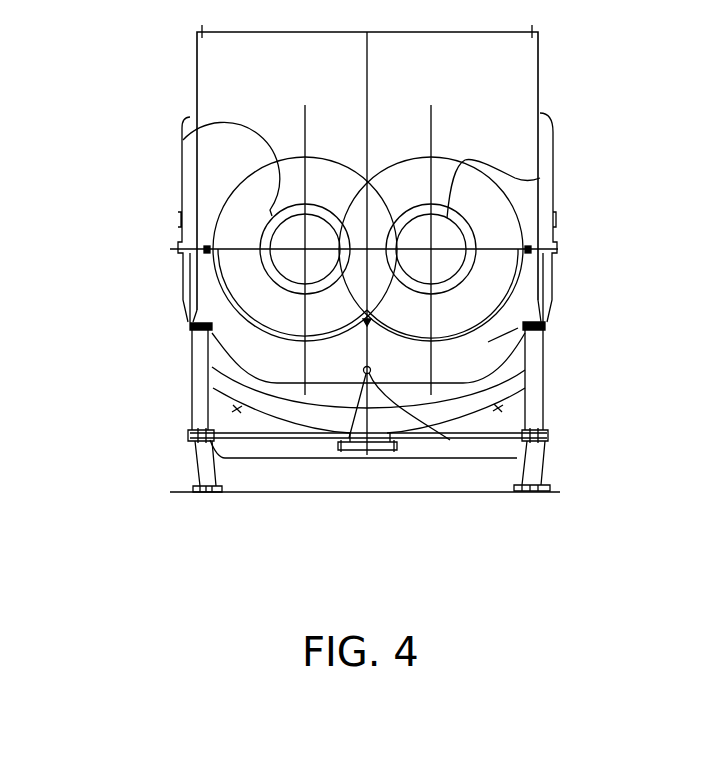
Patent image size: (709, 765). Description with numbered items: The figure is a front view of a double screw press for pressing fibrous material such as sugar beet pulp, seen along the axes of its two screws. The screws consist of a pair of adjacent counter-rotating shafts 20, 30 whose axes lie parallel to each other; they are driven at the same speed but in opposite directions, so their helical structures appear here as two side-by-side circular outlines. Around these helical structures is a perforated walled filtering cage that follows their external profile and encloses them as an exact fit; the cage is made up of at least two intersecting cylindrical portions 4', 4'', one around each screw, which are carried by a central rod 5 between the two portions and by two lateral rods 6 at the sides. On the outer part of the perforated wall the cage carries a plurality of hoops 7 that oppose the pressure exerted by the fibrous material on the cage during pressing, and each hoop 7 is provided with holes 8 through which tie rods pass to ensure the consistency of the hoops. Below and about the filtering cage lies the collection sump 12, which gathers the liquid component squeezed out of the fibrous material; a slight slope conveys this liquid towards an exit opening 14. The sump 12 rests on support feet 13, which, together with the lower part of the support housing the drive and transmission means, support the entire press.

The cylindrical portion 4' is at (216, 275).
The cylindrical portion 4'' is at (506, 273).
The shaft 30 is at (182, 141).
The shaft 20 is at (540, 178).
The lateral rod 6 is at (206, 247).
The hoop 7 is at (518, 328).
The collection sump 12 is at (252, 400).
The support foot 13 is at (195, 462).
The hole 8 is at (338, 448).
The exit opening 14 is at (370, 451).
The central rod 5 is at (450, 440).